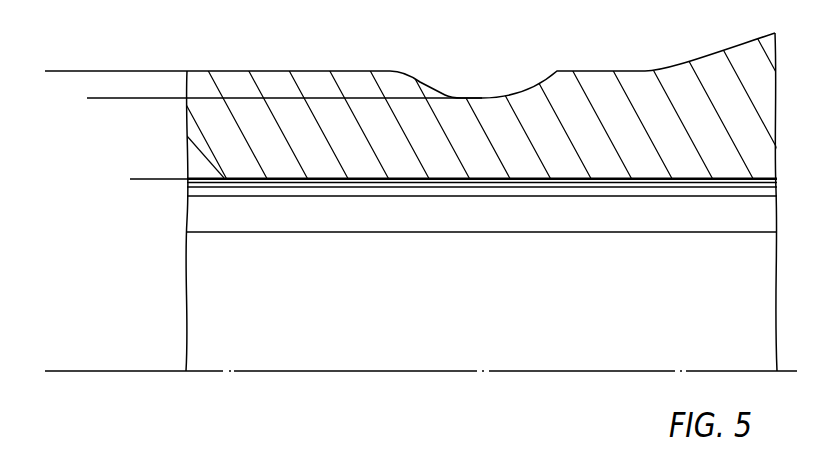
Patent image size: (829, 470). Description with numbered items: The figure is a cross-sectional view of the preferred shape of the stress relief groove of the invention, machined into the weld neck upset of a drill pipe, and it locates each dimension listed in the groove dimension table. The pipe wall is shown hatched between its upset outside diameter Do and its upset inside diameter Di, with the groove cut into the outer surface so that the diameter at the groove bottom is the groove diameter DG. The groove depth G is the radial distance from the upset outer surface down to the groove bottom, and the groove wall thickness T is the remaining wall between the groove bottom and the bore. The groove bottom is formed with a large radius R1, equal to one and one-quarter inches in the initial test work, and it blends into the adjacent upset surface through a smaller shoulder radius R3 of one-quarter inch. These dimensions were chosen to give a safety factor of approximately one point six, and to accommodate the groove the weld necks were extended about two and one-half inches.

The upset outside diameter Do is at (61, 371).
The groove diameter DG is at (97, 107).
The upset inside diameter Di is at (139, 188).
The groove depth G is at (267, 107).
The groove wall thickness T is at (330, 107).
The groove bottom radius R1 is at (477, 88).
The groove shoulder radius R3 is at (552, 64).